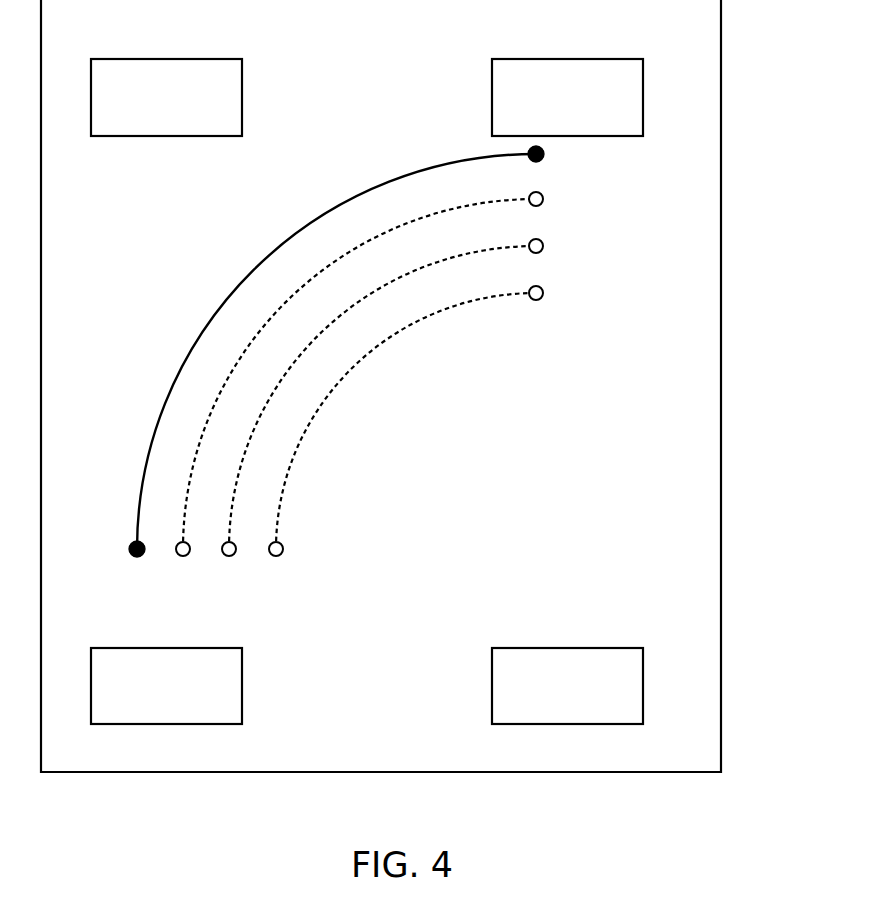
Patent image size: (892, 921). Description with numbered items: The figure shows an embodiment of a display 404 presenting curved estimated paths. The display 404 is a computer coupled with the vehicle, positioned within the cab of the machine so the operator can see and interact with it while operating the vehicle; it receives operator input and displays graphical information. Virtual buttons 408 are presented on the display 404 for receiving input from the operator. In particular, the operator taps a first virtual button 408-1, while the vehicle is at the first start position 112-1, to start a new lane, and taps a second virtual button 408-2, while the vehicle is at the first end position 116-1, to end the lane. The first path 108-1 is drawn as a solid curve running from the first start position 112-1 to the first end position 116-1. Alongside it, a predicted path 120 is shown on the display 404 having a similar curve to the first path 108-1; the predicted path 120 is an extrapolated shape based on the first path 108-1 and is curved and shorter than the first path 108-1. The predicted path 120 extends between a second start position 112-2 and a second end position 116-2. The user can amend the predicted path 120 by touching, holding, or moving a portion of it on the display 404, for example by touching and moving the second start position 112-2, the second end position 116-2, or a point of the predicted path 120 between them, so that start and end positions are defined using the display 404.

The display 404 is at (721, 205).
The virtual buttons 408 is at (174, 59).
The first virtual button 408-1 is at (167, 648).
The second virtual button 408-2 is at (566, 648).
The first path 108-1 is at (217, 307).
The predicted path 120 is at (323, 272).
The first start position 112-1 is at (131, 555).
The second start position 112-2 is at (184, 550).
The first end position 116-1 is at (540, 158).
The second end position 116-2 is at (538, 200).